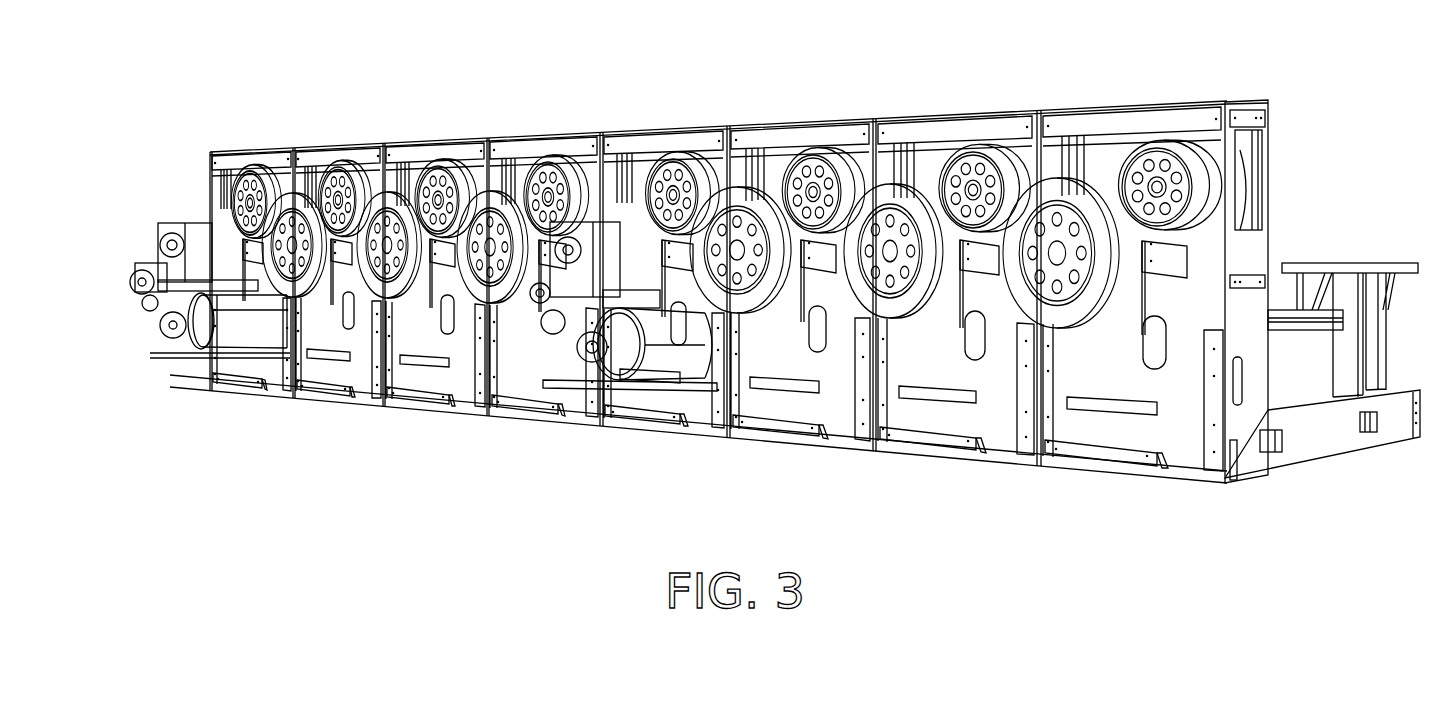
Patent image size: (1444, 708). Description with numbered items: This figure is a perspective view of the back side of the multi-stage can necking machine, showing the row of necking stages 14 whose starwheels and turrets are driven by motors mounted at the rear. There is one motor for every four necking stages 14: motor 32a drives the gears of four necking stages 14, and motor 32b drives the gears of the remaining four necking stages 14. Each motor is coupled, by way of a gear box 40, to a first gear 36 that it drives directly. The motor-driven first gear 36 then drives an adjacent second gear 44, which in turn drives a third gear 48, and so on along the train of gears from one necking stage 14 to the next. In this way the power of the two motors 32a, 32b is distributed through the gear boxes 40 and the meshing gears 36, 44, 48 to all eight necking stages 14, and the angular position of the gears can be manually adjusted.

The necking stage 14 is at (249, 128).
The motor 32a is at (657, 328).
The motor 32b is at (245, 308).
The first gear 36 is at (207, 207).
The gear box 40 is at (162, 225).
The second gear 44 is at (248, 168).
The third gear 48 is at (305, 282).